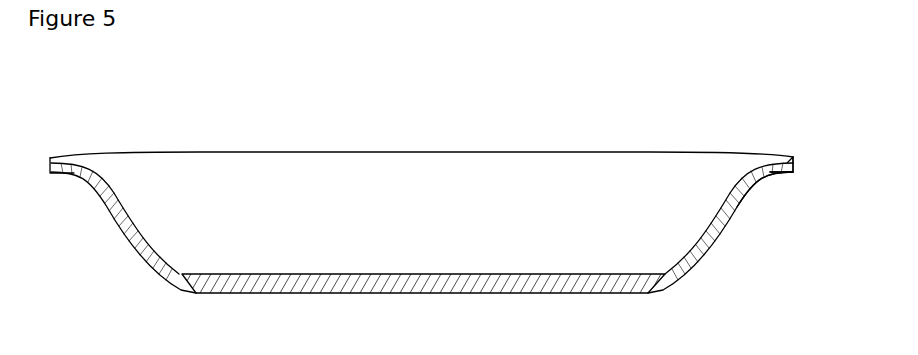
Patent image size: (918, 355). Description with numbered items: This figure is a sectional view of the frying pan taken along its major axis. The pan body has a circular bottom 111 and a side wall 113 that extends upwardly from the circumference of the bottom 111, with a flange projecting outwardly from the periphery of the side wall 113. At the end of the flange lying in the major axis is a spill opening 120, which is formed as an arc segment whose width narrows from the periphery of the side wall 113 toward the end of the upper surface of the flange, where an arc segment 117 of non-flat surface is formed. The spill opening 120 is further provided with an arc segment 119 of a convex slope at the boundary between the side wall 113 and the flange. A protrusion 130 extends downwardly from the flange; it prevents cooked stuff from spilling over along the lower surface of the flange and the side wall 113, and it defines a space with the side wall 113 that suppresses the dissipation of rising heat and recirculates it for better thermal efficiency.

The bottom 111 is at (421, 273).
The side wall 113 is at (720, 212).
The arc segment of non-flat surface 117 is at (784, 156).
The arc segment of a convex slope 119 is at (748, 168).
The spill opening 120 is at (74, 146).
The protrusion 130 is at (48, 176).